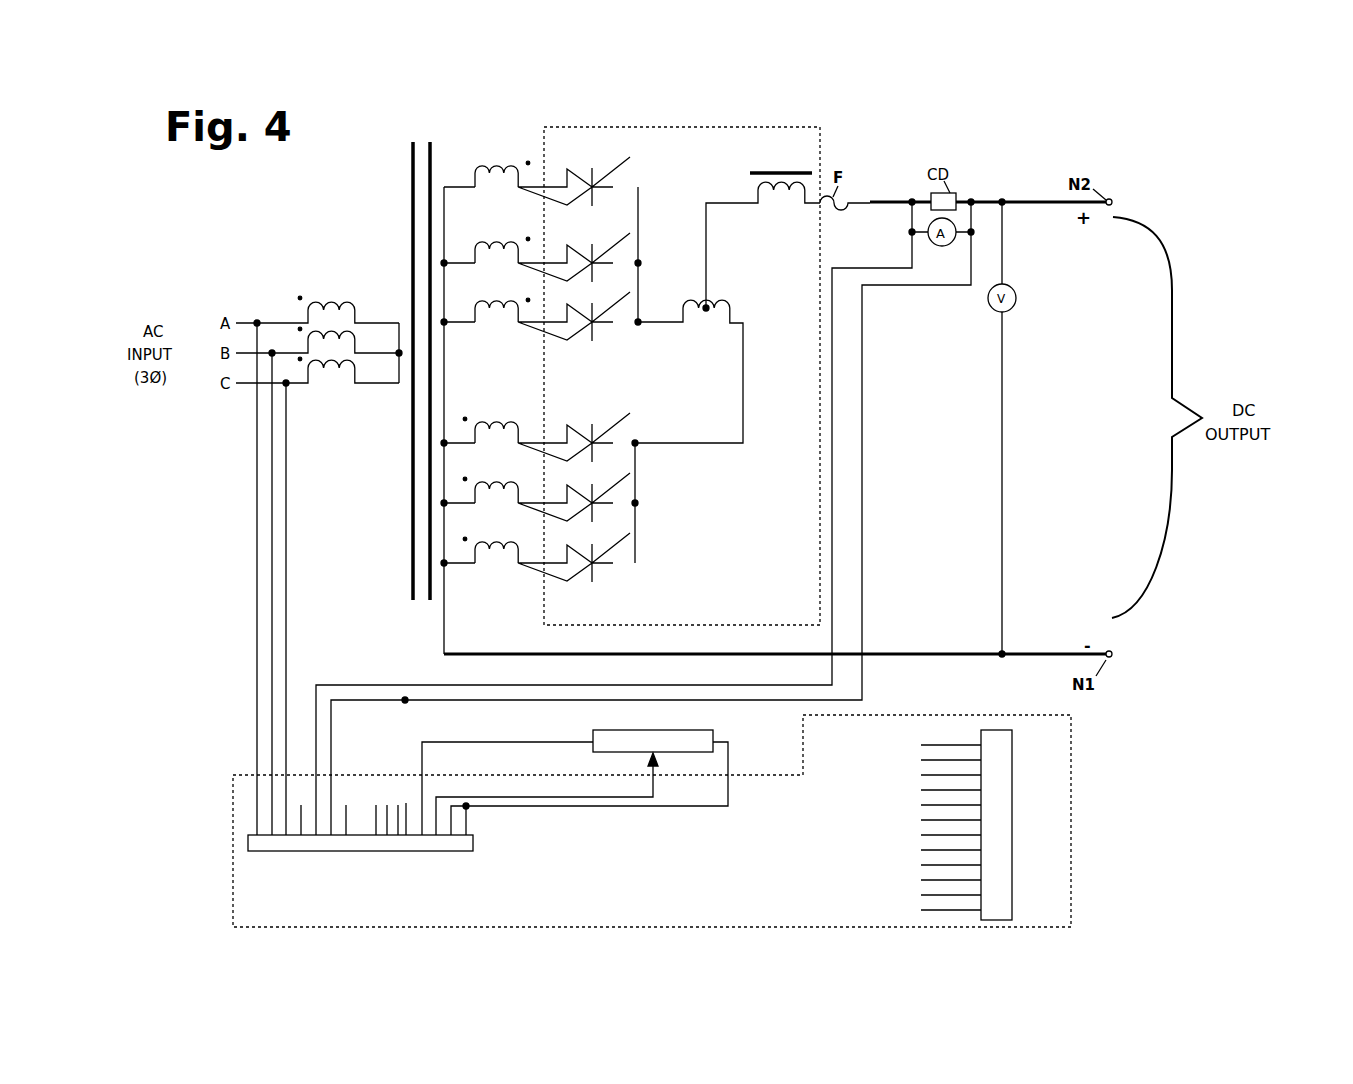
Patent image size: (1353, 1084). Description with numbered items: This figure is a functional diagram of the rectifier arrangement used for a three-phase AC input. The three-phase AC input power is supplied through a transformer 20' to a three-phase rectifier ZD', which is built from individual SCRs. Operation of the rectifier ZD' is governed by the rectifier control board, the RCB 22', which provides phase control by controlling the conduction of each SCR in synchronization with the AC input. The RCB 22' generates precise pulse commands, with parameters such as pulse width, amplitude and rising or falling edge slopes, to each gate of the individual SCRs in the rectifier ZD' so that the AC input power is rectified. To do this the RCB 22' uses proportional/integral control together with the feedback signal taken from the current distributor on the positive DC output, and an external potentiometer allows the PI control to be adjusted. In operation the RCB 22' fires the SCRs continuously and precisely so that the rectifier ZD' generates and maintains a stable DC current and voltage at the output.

The three-phase transformer 20' is at (356, 371).
The three-phase rectifier ZD' is at (669, 350).
The rectifier control board 22' is at (613, 821).